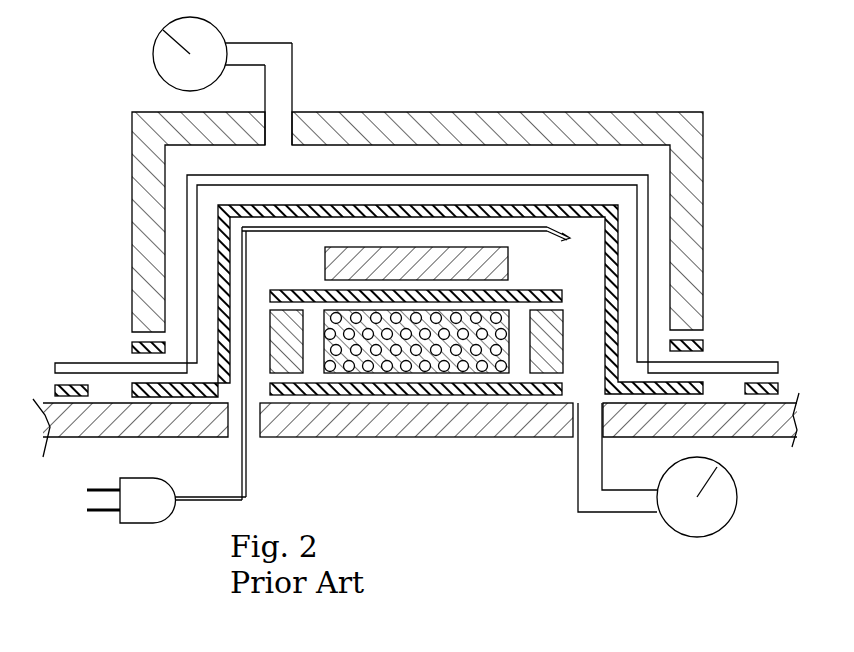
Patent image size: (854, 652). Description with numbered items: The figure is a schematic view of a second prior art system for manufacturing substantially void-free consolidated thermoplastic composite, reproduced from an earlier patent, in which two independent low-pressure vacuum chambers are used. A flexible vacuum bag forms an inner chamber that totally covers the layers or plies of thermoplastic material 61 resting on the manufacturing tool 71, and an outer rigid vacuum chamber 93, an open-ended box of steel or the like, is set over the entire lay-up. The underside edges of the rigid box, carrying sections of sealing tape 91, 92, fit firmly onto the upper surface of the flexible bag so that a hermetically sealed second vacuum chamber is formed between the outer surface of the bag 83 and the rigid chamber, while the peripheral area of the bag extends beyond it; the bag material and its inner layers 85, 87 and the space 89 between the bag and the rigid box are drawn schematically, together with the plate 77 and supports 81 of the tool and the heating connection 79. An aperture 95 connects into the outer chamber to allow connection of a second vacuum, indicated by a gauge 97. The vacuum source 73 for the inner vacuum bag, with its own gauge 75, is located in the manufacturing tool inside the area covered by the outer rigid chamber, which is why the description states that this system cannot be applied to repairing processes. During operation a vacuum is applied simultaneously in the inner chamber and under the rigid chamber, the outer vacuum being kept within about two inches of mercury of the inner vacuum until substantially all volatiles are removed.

The substrates 61 is at (467, 363).
The base plate 71 is at (360, 437).
The vacuum source 73 is at (595, 423).
The vacuum gauge 75 is at (737, 482).
The heater plate 77 is at (422, 385).
The power cable 79 is at (252, 423).
The support block 81 is at (288, 357).
The inner liner 83 is at (497, 249).
The inner shell 85 is at (473, 184).
The heating block 87 is at (387, 230).
The gap 89 is at (188, 262).
The seal 91 is at (55, 389).
The seal 92 is at (132, 345).
The outer housing 93 is at (620, 128).
The gas pipe 95 is at (291, 127).
The pressure gauge 97 is at (218, 28).